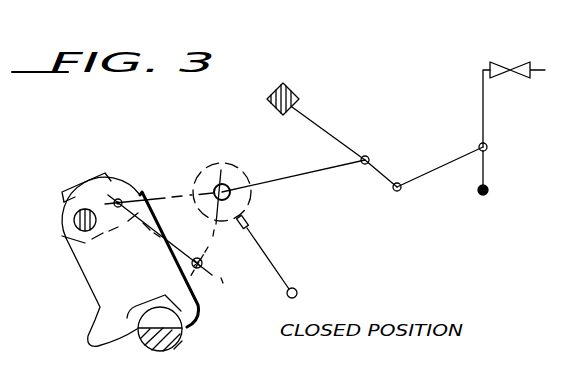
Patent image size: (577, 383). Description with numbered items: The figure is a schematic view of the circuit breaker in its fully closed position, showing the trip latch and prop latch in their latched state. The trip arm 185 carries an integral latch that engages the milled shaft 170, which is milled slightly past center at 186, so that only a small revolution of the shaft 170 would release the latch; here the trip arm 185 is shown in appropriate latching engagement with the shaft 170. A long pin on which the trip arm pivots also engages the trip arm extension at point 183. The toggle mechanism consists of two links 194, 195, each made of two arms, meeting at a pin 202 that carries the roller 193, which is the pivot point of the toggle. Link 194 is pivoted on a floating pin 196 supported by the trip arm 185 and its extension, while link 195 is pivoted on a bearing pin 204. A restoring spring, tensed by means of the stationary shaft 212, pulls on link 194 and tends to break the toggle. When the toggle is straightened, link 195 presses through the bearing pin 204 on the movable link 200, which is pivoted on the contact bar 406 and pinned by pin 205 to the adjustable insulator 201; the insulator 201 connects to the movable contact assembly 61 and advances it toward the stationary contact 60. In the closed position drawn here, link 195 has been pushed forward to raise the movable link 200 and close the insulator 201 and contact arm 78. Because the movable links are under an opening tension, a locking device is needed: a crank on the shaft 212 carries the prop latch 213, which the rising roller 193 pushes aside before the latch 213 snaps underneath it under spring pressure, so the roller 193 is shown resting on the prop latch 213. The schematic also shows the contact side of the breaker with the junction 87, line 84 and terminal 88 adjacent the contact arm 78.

The stationary contact 60 is at (520, 62).
The movable contact assembly 61 is at (510, 52).
The contact arm 78 is at (482, 107).
The conduit 84 is at (485, 172).
The junction 87 is at (488, 147).
The terminal 88 is at (490, 190).
The milled shaft 170 is at (167, 347).
The point of engagement 183 is at (75, 227).
The trip arm 185 is at (88, 278).
The milled portion 186 is at (180, 309).
The roller 193 is at (228, 164).
The link 194 is at (165, 196).
The link 195 is at (288, 177).
The floating pin 196 is at (120, 200).
The movable link 200 is at (315, 120).
The adjustable insulator 201 is at (420, 173).
The pin 202 is at (228, 186).
The bearing pin 204 is at (372, 158).
The pin 205 is at (393, 192).
The stationary shaft 212 is at (290, 298).
The prop latch 213 is at (270, 253).
The contact bar 406 is at (293, 90).